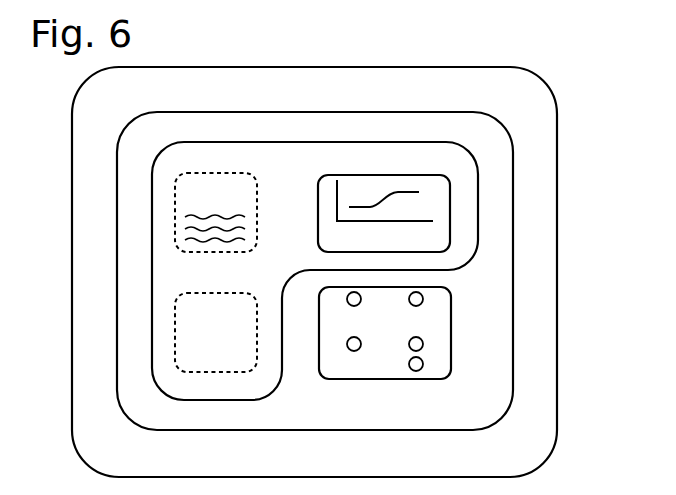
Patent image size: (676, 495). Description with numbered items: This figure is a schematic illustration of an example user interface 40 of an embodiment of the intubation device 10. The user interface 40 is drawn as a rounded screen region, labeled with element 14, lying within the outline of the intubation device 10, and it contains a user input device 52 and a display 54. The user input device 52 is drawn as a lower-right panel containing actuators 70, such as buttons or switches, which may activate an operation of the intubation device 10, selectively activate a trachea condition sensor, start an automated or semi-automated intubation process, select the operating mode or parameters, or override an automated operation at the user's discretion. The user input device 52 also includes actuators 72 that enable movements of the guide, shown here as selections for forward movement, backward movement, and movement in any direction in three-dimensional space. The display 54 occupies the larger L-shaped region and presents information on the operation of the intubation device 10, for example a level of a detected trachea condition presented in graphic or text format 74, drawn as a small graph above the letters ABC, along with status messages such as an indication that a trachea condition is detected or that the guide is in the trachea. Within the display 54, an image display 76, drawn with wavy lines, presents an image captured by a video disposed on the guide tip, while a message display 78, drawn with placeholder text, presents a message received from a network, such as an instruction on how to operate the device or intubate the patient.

The intubation device 10 is at (582, 91).
The operation panel 14 is at (305, 67).
The user interface 40 is at (305, 112).
The user input device 52 is at (452, 322).
The display 54 is at (437, 142).
The actuators 70 is at (424, 345).
The actuators 72 is at (409, 302).
The graphic or text format 74 is at (405, 175).
The image display 76 is at (212, 173).
The message display 78 is at (212, 293).